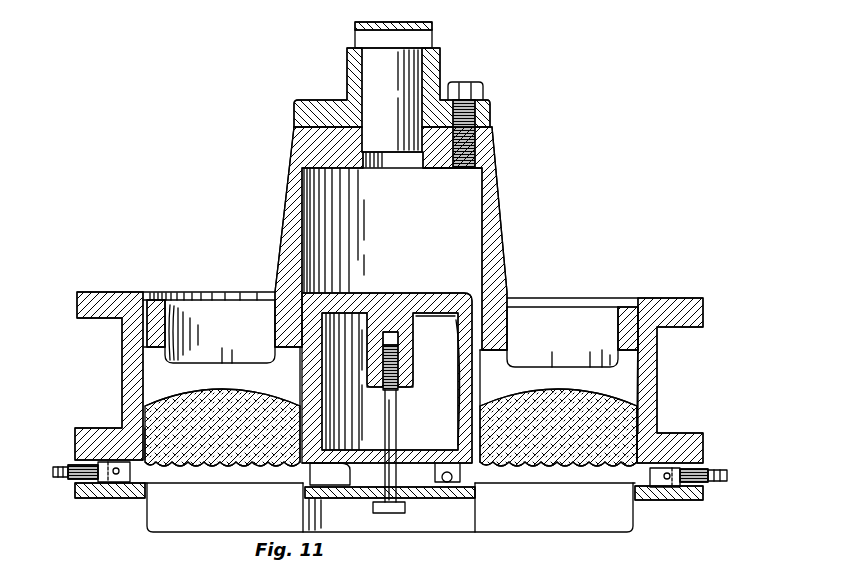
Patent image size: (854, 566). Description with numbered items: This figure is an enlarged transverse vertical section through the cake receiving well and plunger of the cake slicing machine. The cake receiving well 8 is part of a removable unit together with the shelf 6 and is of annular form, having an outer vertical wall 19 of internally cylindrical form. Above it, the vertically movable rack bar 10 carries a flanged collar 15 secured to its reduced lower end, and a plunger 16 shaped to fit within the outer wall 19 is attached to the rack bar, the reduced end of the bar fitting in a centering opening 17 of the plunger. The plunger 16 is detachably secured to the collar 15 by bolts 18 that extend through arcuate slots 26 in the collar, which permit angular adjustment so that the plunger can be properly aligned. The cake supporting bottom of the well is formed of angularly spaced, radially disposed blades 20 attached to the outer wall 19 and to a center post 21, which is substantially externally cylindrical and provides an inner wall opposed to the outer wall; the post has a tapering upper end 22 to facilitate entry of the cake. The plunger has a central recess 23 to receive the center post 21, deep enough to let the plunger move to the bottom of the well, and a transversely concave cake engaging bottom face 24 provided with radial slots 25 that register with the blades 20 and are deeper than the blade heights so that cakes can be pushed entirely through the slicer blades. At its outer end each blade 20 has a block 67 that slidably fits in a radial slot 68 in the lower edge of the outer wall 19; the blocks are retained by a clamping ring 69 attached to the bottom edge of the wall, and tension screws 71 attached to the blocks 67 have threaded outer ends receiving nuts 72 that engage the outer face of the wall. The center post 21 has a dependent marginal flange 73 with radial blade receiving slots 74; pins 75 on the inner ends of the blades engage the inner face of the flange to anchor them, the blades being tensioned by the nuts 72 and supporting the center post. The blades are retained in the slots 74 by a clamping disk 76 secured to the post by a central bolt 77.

The shelf 6 is at (668, 298).
The cake receiving well 8 is at (150, 292).
The rack bar 10 is at (355, 38).
The flanged collar 15 is at (296, 106).
The plunger 16 is at (278, 184).
The centering opening 17 is at (382, 170).
The bolts 18 is at (470, 82).
The outer vertical wall 19 is at (660, 388).
The blades 20 is at (206, 483).
The center post 21 is at (457, 386).
The tapering upper end 22 is at (470, 288).
The central recess 23 is at (484, 222).
The bottom face 24 is at (391, 406).
The radial slots 25 is at (220, 362).
The arcuate slots 26 is at (480, 114).
The block 67 is at (116, 484).
The radial slot 68 is at (80, 432).
The clamping ring 69 is at (80, 498).
The tension screws 71 is at (53, 470).
The nuts 72 is at (75, 466).
The dependent marginal flange 73 is at (435, 380).
The blade receiving slots 74 is at (340, 452).
The pins 75 is at (447, 484).
The clamping disk 76 is at (356, 498).
The central bolt 77 is at (397, 428).